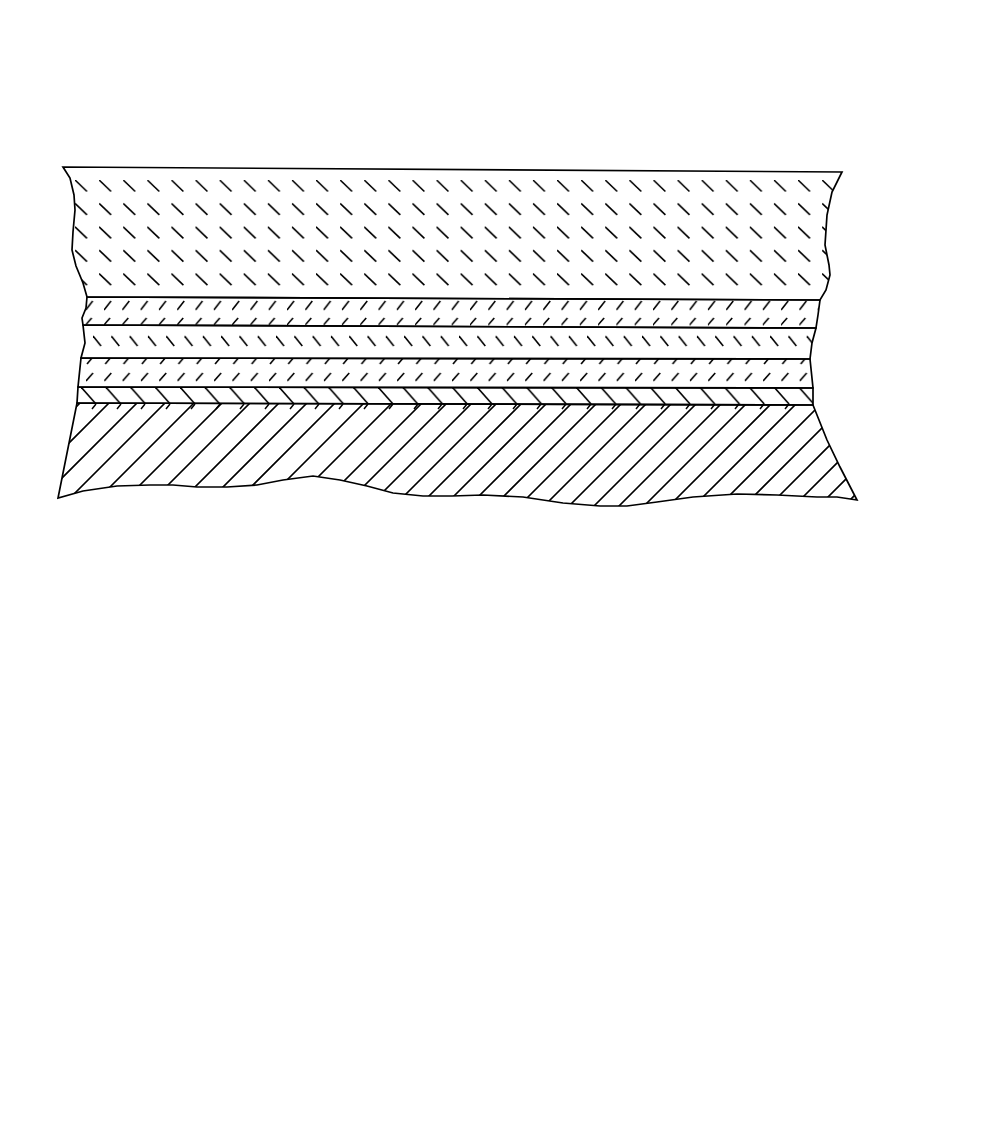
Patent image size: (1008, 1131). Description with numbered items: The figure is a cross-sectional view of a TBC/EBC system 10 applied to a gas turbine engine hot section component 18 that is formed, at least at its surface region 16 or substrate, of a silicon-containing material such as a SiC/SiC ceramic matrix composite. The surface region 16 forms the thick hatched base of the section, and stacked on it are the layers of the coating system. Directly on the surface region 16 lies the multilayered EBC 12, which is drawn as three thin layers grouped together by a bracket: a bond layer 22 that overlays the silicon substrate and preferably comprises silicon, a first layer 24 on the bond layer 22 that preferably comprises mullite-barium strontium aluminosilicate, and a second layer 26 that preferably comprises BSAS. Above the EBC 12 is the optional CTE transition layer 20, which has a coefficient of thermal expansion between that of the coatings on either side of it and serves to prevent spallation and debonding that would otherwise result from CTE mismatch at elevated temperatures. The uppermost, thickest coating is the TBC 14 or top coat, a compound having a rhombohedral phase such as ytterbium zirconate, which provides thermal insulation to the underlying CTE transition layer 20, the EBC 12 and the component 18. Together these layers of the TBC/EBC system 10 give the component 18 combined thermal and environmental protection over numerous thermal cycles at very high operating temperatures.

The TBC/EBC system 10 is at (556, 46).
The EBC 12 is at (832, 328).
The TBC 14 is at (741, 178).
The surface region 16 is at (165, 480).
The hot section component 18 is at (144, 119).
The CTE transition layer 20 is at (93, 312).
The bond layer 22 is at (813, 405).
The first layer 24 is at (95, 370).
The second layer 26 is at (93, 345).